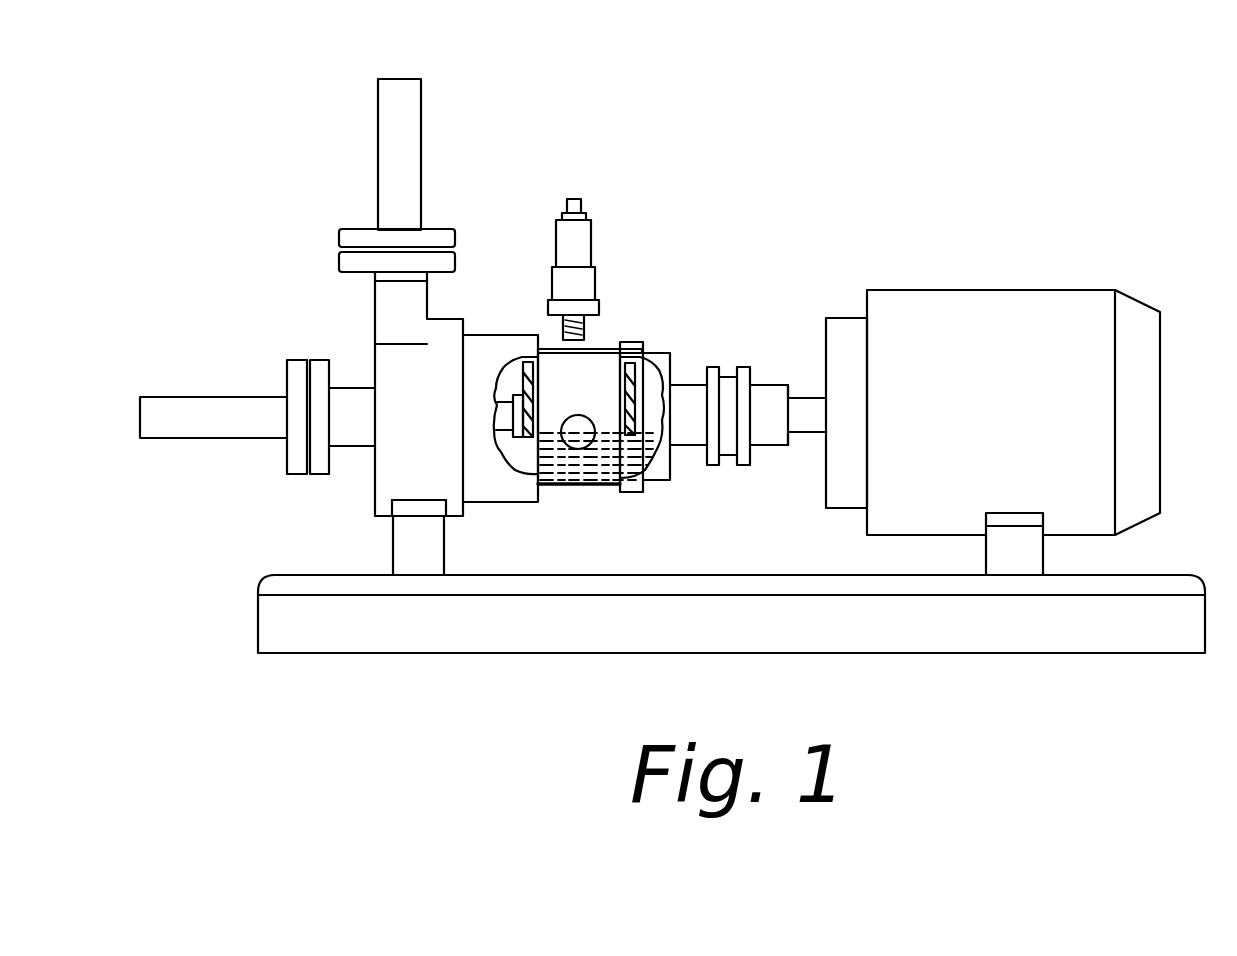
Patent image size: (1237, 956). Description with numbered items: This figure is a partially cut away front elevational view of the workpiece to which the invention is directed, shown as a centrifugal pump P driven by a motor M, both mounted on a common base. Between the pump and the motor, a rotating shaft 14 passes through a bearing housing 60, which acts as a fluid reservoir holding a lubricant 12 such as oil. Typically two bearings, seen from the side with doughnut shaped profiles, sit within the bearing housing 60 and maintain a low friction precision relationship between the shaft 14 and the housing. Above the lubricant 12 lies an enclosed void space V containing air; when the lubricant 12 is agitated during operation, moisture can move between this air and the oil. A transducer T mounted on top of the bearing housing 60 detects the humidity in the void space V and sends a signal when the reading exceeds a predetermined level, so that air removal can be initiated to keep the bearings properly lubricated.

The centrifugal pump P is at (387, 487).
The void space V is at (600, 384).
The transducer T is at (593, 268).
The bearing housing 60 is at (598, 372).
The lubricant 12 is at (585, 470).
The shaft 14 is at (816, 423).
The motor M is at (1165, 413).